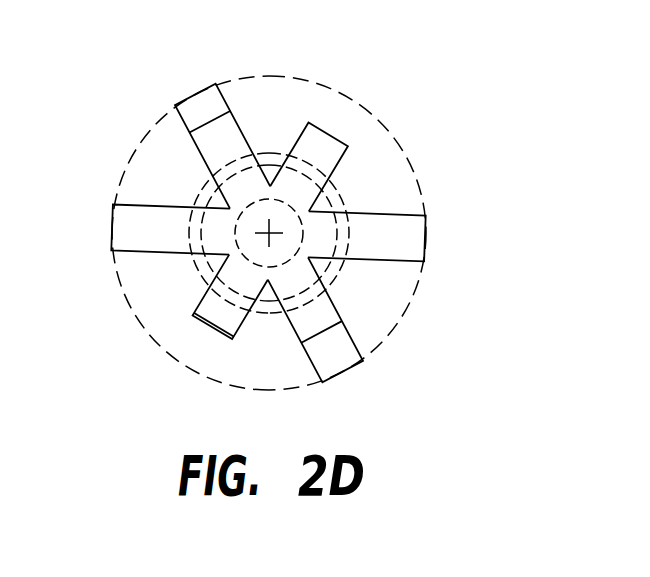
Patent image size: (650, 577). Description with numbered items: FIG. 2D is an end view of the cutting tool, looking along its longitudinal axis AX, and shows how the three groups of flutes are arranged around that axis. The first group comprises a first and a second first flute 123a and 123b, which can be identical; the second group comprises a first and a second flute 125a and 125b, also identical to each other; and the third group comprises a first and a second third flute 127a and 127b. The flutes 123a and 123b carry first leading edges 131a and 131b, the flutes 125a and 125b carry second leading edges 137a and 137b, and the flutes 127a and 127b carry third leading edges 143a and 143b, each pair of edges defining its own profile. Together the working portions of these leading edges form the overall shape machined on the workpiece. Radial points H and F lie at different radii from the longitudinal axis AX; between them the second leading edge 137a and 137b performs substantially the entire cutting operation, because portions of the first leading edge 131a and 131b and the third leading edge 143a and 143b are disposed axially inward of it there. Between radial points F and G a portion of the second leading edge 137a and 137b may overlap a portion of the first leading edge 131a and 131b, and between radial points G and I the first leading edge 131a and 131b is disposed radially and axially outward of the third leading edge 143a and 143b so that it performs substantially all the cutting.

The first flute 123a is at (160, 144).
The first flute 123b is at (368, 322).
The second flute 125a is at (142, 272).
The second flute 125b is at (400, 198).
The third flute 127a is at (202, 357).
The third flute 127b is at (285, 100).
The first leading edge 131a is at (113, 204).
The first leading edge 131b is at (424, 261).
The second leading edge 137a is at (200, 303).
The second leading edge 137b is at (328, 132).
The third leading edge 143a is at (300, 345).
The third leading edge 143b is at (231, 112).
The axis AX is at (269, 233).
The radial point G is at (350, 224).
The radial point F is at (335, 245).
The radial point H is at (333, 280).
The radial point I is at (392, 128).